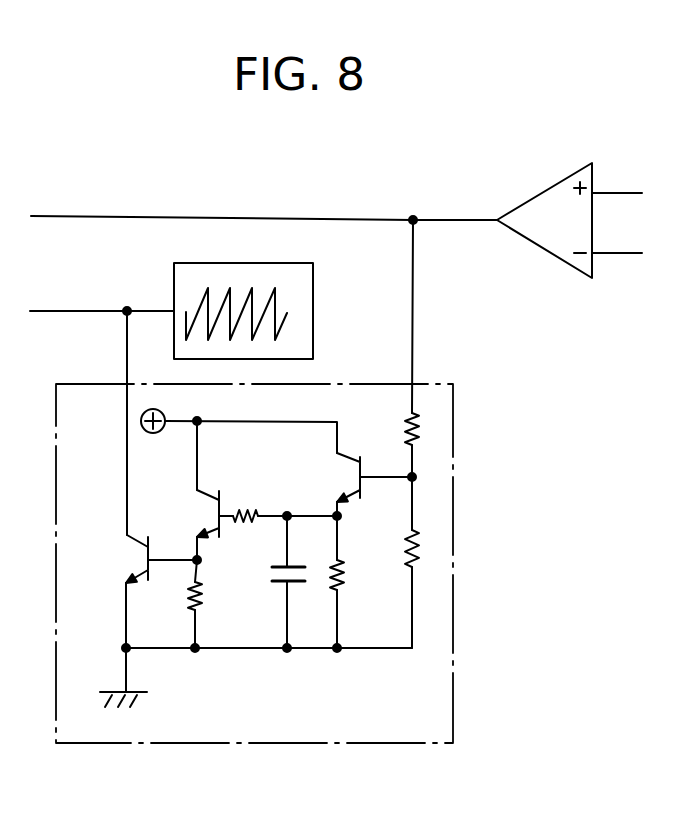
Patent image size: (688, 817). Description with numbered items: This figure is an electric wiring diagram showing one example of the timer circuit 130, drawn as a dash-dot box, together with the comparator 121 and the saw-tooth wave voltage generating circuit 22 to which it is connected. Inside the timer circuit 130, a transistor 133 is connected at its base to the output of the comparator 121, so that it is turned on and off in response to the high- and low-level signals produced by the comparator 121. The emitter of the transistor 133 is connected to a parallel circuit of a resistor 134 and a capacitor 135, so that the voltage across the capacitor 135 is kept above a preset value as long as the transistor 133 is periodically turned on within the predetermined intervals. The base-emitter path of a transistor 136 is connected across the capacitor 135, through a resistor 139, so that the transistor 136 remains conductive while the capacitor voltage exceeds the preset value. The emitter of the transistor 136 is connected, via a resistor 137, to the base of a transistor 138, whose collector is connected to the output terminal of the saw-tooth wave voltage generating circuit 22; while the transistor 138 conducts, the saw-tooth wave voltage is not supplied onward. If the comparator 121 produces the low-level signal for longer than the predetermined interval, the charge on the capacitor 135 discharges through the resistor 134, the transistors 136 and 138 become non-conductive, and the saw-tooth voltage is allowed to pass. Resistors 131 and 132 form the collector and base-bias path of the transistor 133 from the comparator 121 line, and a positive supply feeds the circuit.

The saw-tooth wave voltage generating circuit 22 is at (207, 263).
The comparator 121 is at (535, 197).
The timer circuit 130 is at (454, 400).
The resistor 131 is at (404, 432).
The resistor 132 is at (420, 555).
The transistor 133 is at (347, 478).
The resistor 134 is at (345, 580).
The capacitor 135 is at (268, 578).
The transistor 136 is at (212, 492).
The resistor 137 is at (185, 602).
The transistor 138 is at (138, 562).
The resistor 139 is at (240, 523).